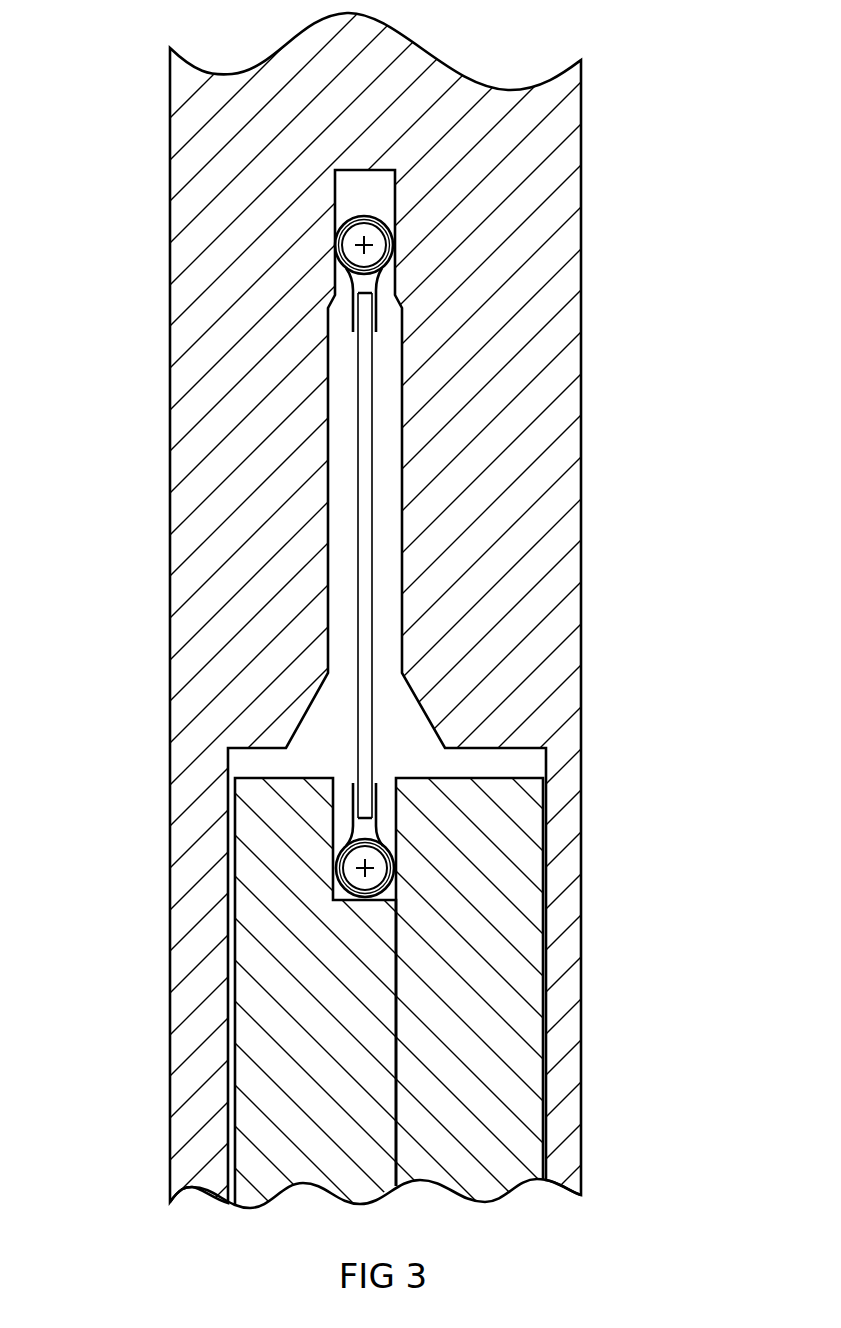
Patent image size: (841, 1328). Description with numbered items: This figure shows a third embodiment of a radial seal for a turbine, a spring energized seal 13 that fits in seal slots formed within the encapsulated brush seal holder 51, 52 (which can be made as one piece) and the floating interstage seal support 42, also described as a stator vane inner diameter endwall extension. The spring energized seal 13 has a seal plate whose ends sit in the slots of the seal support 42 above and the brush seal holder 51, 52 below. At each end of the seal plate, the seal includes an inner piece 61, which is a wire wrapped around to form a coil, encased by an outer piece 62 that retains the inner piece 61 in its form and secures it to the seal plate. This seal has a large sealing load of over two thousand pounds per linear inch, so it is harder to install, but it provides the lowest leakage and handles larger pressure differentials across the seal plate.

The spring energized seal 13 is at (365, 560).
The floating interstage seal support 42 is at (488, 443).
The encapsulated brush seal holder 51 is at (323, 985).
The encapsulated brush seal holder 52 is at (472, 1017).
The inner piece 61 is at (347, 217).
The outer piece 62 is at (380, 217).